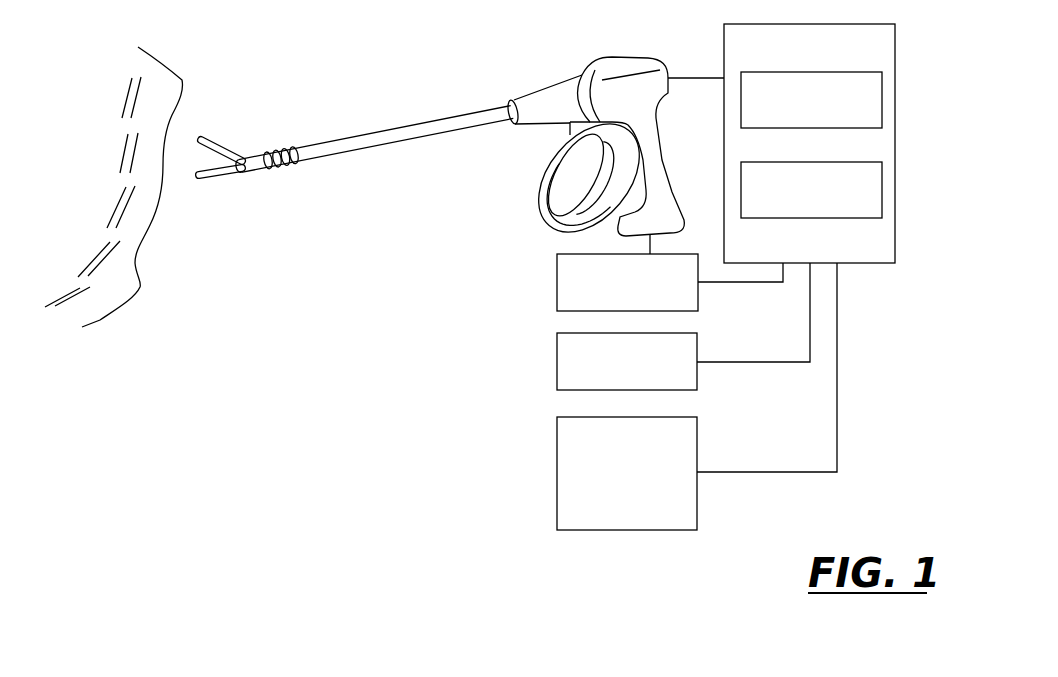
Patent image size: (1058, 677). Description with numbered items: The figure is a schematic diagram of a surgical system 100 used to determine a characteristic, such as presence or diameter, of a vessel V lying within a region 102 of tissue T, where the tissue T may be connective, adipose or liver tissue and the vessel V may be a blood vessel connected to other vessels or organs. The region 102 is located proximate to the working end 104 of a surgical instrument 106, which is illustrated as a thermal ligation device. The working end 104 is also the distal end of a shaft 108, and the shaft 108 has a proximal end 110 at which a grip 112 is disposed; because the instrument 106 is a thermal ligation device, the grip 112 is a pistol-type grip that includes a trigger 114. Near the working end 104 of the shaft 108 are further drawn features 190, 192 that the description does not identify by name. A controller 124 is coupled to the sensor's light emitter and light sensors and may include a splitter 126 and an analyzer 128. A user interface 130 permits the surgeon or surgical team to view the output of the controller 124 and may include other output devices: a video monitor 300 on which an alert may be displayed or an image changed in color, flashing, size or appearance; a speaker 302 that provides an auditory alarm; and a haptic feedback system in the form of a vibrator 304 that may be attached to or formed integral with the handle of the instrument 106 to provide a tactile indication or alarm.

The surgical system 100 is at (359, 381).
The region of tissue 102 is at (163, 91).
The working end 104 is at (242, 147).
The surgical instrument 106 is at (554, 126).
The shaft 108 is at (357, 140).
The proximal end 110 is at (503, 103).
The grip 112 is at (557, 155).
The trigger 114 is at (592, 176).
The controller 124 is at (845, 155).
The splitter 126 is at (868, 108).
The analyzer 128 is at (868, 190).
The user interface 130 is at (356, 154).
The sensor rings 190 is at (283, 168).
The distal sensor ring 192 is at (272, 168).
The video monitor 300 is at (568, 465).
The speaker 302 is at (567, 365).
The vibrator 304 is at (567, 282).
The tissue T is at (83, 125).
The vessel V is at (113, 213).